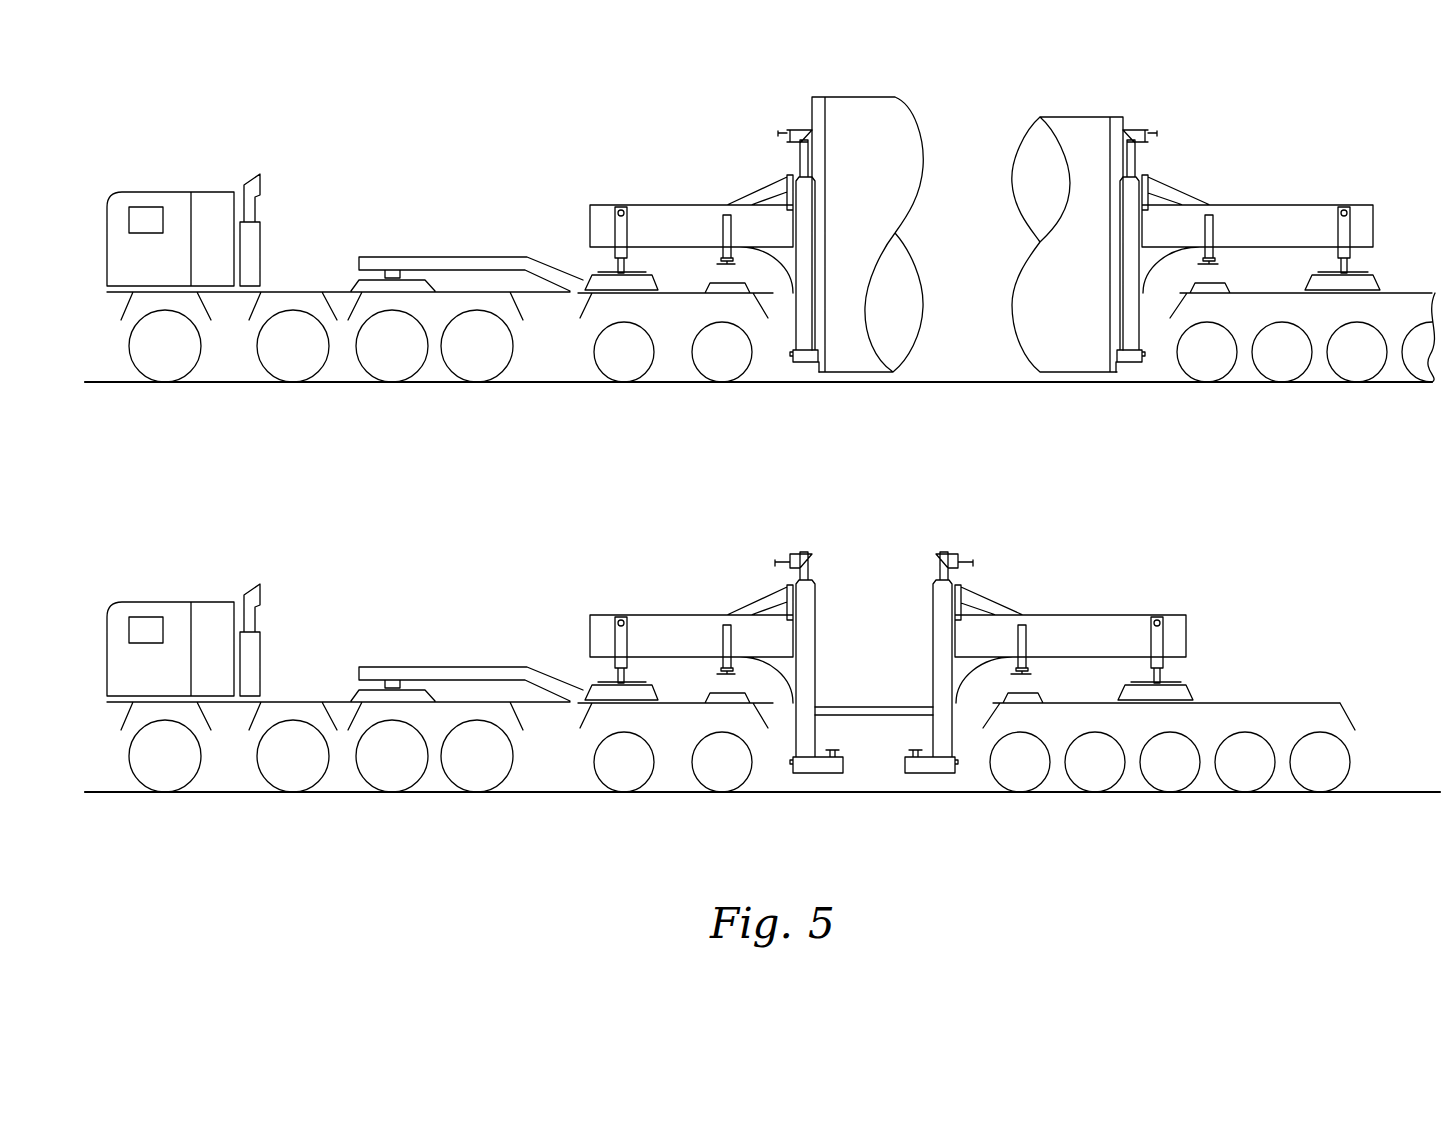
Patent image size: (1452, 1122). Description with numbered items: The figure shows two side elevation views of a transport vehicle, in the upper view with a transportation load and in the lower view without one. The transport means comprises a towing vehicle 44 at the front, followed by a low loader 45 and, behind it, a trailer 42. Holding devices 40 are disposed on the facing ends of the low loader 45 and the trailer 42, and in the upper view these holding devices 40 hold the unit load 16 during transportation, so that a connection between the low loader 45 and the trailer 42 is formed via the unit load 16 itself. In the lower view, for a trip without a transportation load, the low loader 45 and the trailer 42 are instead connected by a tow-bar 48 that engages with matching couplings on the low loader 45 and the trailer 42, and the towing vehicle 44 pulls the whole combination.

The unit load 16 is at (922, 143).
The holding device 40 is at (781, 100).
The trailer 42 is at (1284, 180).
The towing vehicle 44 is at (317, 210).
The low loader 45 is at (609, 170).
The tow-bar 48 is at (862, 706).